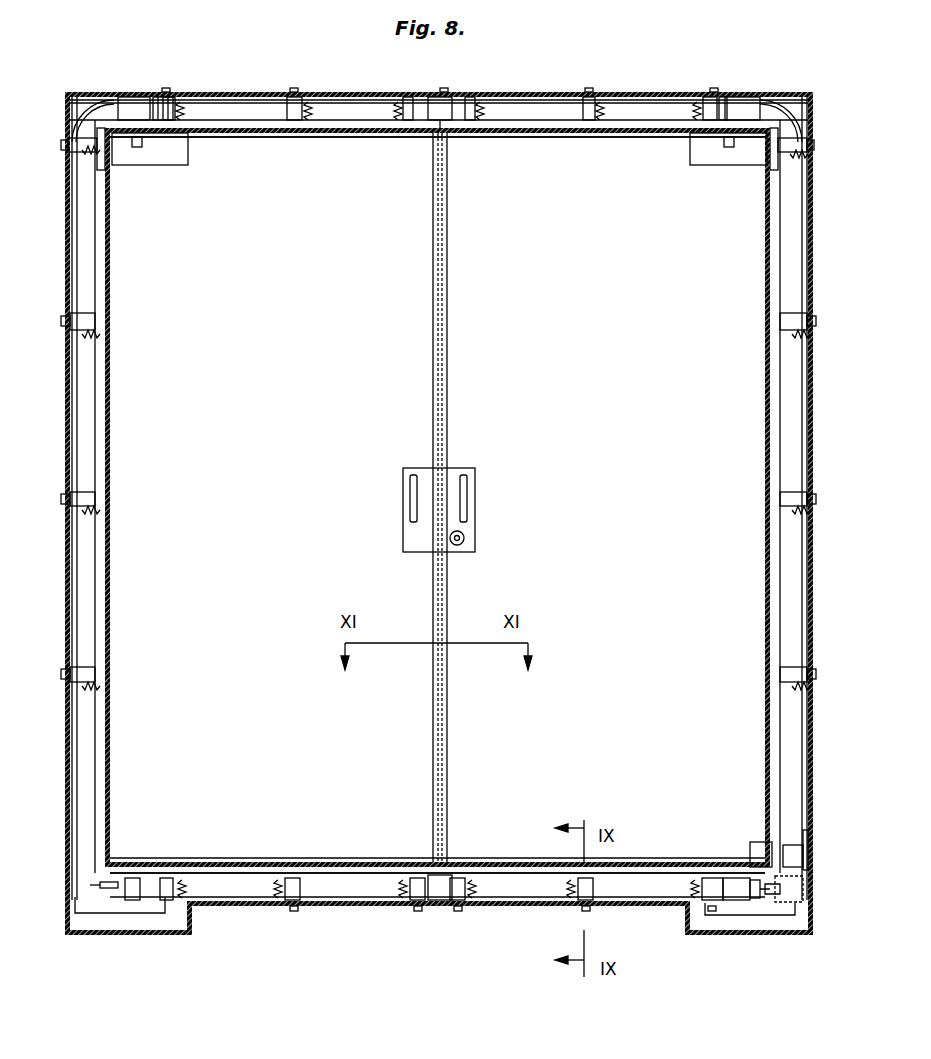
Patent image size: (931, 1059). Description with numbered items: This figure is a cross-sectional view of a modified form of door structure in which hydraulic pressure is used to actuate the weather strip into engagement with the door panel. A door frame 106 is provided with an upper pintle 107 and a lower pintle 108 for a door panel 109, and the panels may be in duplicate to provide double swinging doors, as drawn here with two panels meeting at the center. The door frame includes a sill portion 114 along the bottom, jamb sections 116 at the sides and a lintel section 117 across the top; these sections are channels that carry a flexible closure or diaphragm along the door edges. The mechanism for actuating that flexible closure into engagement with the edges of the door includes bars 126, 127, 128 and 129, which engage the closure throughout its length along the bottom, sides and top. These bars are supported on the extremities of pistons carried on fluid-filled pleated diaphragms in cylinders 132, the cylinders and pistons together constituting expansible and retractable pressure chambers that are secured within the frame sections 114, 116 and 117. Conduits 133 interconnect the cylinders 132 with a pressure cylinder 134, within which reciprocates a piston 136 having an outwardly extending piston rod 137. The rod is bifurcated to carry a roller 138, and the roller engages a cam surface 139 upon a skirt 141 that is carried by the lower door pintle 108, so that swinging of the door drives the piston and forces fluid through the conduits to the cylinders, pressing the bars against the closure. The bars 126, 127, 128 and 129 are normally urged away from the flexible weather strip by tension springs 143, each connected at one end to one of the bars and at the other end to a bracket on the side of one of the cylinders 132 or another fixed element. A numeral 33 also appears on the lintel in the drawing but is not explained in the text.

The frame head member 33 is at (633, 105).
The door frame 106 is at (110, 604).
The upper pintle 107 is at (740, 105).
The lower pintle 108 is at (688, 930).
The door panel 109 is at (312, 425).
The sill portion 114 is at (280, 862).
The jamb sections 116 is at (68, 108).
The lintel section 117 is at (530, 95).
The bar 126 is at (355, 862).
The bar 127 is at (98, 396).
The bar 128 is at (348, 122).
The bar 129 is at (778, 275).
The cylinders 132 is at (300, 103).
The conduits 133 is at (232, 100).
The pressure cylinder 134 is at (790, 895).
The piston 136 is at (798, 905).
The piston rod 137 is at (765, 897).
The roller 138 is at (752, 902).
The cam surface 139 is at (758, 862).
The skirt 141 is at (730, 888).
The tension springs 143 is at (92, 690).